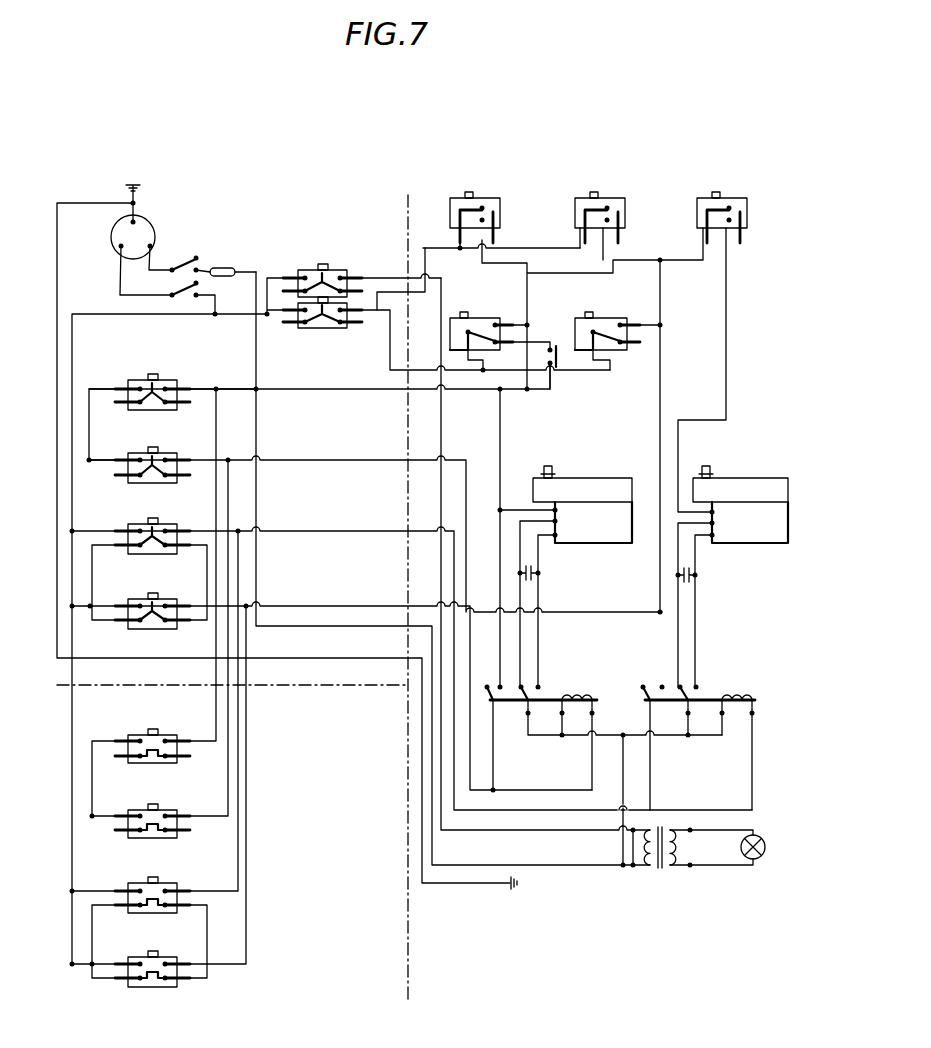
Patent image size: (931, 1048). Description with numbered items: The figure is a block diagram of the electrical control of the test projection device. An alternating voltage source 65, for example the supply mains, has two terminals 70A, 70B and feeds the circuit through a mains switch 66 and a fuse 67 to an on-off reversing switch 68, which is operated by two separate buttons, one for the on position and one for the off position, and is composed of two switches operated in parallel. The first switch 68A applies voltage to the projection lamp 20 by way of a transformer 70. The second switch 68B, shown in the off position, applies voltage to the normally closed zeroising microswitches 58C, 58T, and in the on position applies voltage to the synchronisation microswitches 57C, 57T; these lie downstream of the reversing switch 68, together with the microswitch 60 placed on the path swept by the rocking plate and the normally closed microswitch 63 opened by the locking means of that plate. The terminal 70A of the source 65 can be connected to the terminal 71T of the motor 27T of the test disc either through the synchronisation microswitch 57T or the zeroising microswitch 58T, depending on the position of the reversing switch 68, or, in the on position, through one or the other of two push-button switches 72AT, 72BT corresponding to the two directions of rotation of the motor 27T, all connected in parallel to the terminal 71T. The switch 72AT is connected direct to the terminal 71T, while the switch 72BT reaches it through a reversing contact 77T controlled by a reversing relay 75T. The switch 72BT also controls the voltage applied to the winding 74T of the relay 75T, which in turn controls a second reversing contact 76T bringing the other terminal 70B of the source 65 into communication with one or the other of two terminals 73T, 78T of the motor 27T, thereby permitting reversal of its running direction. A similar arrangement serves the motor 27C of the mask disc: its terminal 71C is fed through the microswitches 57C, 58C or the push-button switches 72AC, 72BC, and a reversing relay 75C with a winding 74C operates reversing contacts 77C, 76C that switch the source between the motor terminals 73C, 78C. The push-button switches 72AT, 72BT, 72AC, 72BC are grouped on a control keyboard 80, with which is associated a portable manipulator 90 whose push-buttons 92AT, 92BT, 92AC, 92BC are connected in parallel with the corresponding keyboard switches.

The source of alternating voltage 65 is at (141, 213).
The terminal of the source 70A is at (121, 246).
The other terminal of the source 70B is at (150, 246).
The mains switch 66 is at (178, 258).
The fuse 67 is at (226, 268).
The on-off reversing switch 68 is at (329, 295).
The first switch of the reversing switch 68A is at (291, 270).
The second switch of the reversing switch 68B is at (300, 330).
The push-button operated switch 72AT is at (137, 380).
The push-button operated switch 72BT is at (137, 453).
The push-button switch 72AC is at (138, 524).
The push-button switch 72BC is at (138, 599).
The push-button of the portable manipulator 92AT is at (137, 735).
The push-button of the portable manipulator 92BT is at (137, 810).
The push-button of the portable manipulator 92AC is at (138, 883).
The push-button of the portable manipulator 92BC is at (110, 987).
The zeroising microswitch 58T is at (452, 198).
The zeroising microswitch 58C is at (578, 198).
The microswitch 63 is at (698, 198).
The synchronisation switch 57T is at (468, 318).
The synchronisation switch 57C is at (596, 318).
The microswitch 60 is at (549, 348).
The terminal of the motor 71T is at (548, 512).
The motor 27T is at (624, 515).
The terminal of the motor 73T is at (555, 521).
The terminal of the motor 78T is at (555, 535).
The timer unit 71C is at (712, 512).
The motor 27C is at (778, 515).
The capacitor 73C is at (712, 523).
The lead 78C is at (712, 535).
The reversing contact 77T is at (488, 687).
The reversing relay 75T is at (565, 703).
The second reversing contact 76T is at (522, 687).
The winding of the reversing relay 74T is at (567, 718).
The relay contact 77C is at (644, 687).
The reversing relay 75C is at (733, 703).
The reversing contact 76C is at (681, 687).
The winding of the reversing relay 74C is at (740, 720).
The control keyboard 80 is at (410, 687).
The transformer 70 is at (660, 868).
The projection lamp 20 is at (761, 838).
The portable manipulator 90 is at (409, 936).